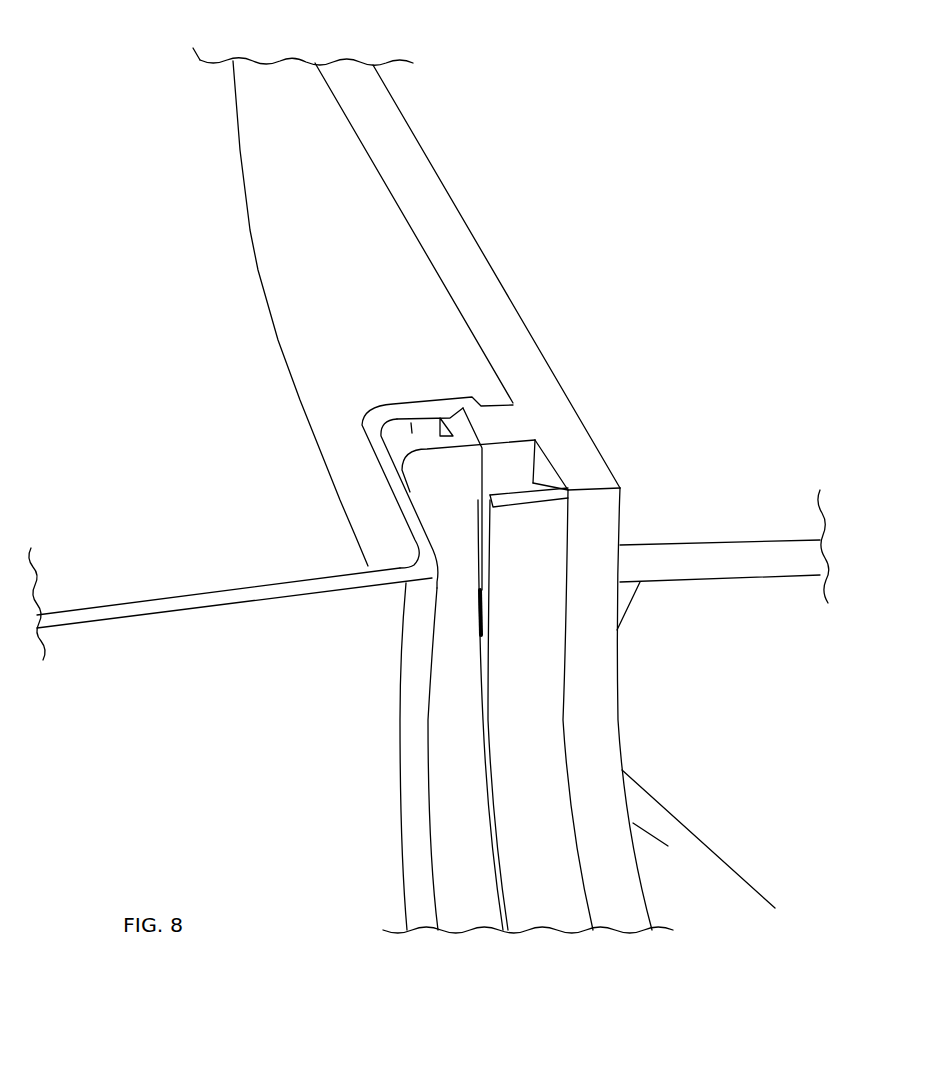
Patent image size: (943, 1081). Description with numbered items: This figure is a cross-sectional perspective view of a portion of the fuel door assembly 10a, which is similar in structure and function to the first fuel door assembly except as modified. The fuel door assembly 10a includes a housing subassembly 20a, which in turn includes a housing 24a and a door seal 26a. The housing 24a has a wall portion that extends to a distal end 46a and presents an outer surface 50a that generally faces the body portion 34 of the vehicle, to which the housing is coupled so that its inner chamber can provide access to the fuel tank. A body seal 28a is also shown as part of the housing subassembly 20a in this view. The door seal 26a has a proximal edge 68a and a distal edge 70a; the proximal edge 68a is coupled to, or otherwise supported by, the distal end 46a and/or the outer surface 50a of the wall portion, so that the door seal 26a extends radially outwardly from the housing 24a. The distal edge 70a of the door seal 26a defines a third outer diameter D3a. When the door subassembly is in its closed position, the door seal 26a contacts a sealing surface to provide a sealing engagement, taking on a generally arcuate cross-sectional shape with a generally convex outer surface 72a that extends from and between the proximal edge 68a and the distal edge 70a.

The fuel door assembly 10a is at (120, 102).
The outer surface 50a is at (353, 318).
The housing 24a is at (437, 197).
The housing subassembly 20a is at (490, 267).
The body portion 34 is at (250, 592).
The inner member 28a is at (448, 669).
The proximal edge 68a is at (568, 490).
The third outer diameter D3a is at (484, 512).
The distal edge 70a is at (482, 703).
The convex outer surface 72a is at (529, 660).
The door seal 26a is at (542, 707).
The distal end 46a is at (600, 637).